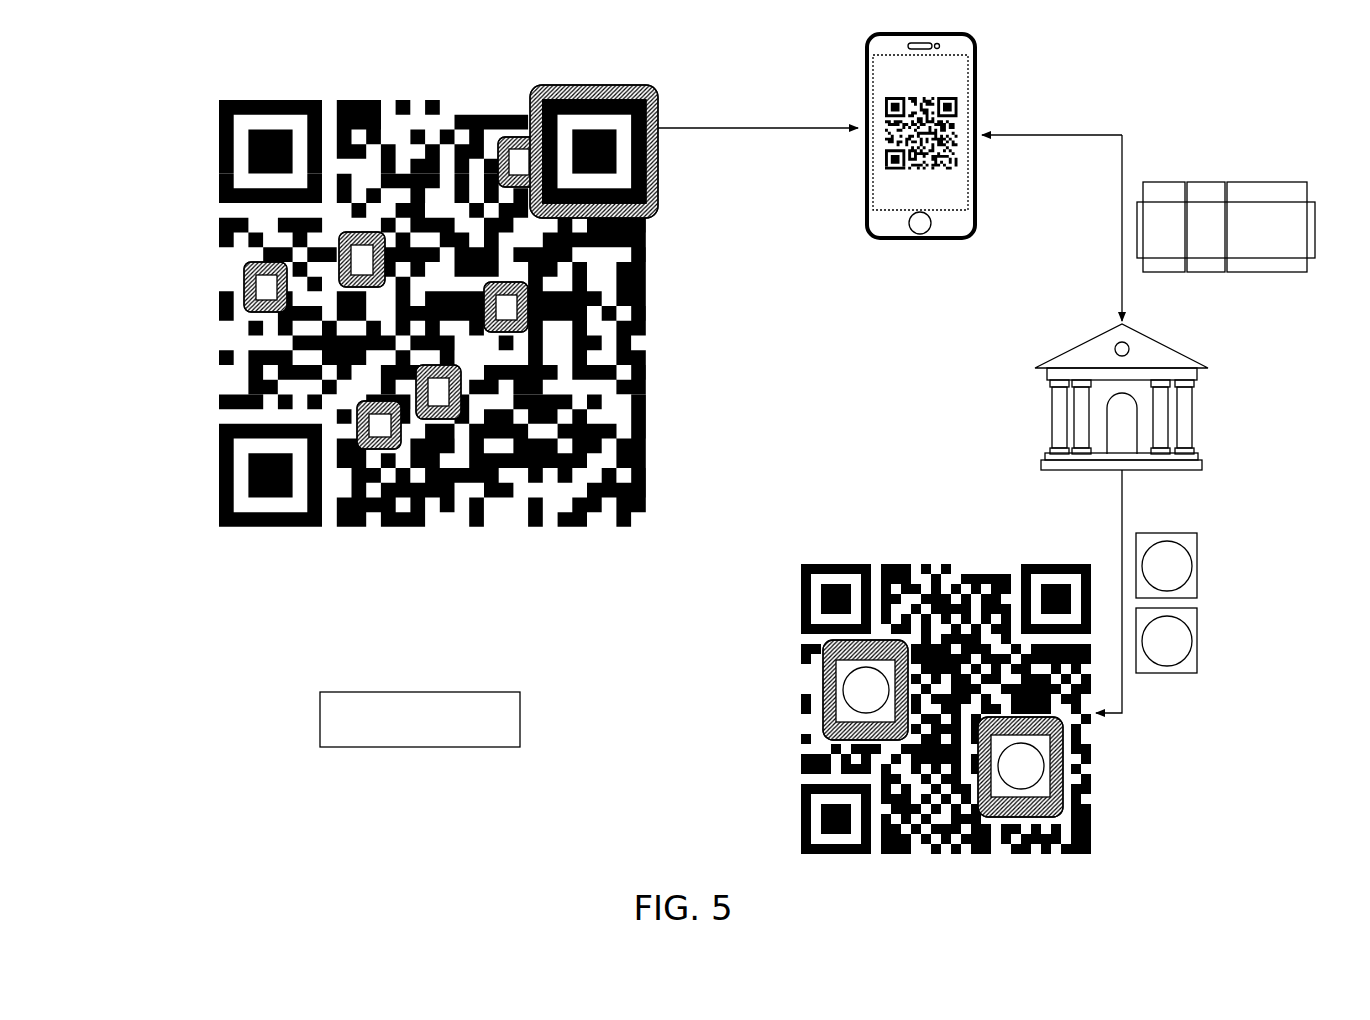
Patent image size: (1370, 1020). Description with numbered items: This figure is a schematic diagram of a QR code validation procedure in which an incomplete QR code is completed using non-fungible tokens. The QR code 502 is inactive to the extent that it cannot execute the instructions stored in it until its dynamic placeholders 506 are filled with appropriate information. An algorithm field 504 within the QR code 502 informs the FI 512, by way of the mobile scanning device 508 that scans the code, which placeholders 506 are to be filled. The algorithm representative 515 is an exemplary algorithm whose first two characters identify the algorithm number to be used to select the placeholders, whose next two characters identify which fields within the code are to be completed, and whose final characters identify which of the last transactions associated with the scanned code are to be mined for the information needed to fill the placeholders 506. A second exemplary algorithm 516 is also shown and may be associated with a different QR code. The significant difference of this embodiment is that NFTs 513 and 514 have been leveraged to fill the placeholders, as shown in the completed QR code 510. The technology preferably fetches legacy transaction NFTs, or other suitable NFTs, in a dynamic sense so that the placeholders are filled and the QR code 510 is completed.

The QR code 502 is at (208, 135).
The algorithm field 504 is at (598, 87).
The dynamic placeholders 506 is at (506, 137).
The mobile scanning device 508 is at (922, 33).
The completed QR code 510 is at (902, 563).
The FI 512 is at (1080, 348).
The NFT 513 is at (1197, 567).
The NFT 514 is at (1197, 641).
The algorithm representative 515 is at (1238, 182).
The second exemplary algorithm 516 is at (420, 692).